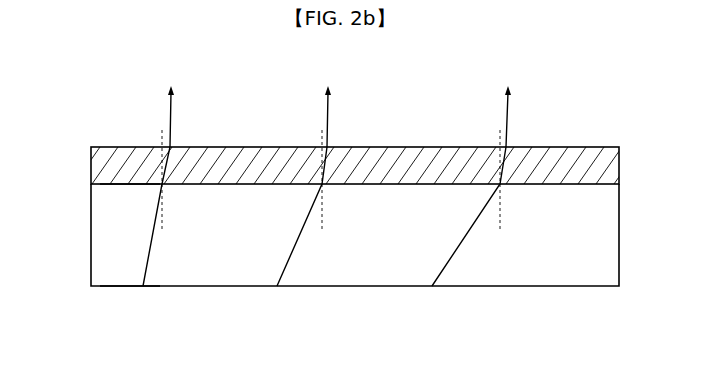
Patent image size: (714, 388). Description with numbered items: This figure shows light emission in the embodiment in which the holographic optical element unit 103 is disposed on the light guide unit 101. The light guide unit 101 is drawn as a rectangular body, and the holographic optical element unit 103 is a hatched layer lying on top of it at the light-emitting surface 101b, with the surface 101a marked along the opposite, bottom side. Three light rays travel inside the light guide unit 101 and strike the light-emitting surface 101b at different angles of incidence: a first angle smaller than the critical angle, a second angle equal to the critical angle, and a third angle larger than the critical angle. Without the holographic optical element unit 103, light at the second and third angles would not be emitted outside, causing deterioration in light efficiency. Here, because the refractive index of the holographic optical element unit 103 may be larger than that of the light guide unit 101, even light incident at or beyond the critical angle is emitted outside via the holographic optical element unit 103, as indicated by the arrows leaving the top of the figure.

The light guide unit 101 is at (103, 240).
The holographic optical element unit 103 is at (102, 168).
The bottom surface of substrate 101a is at (130, 286).
The light-emitting surface 101b is at (131, 165).